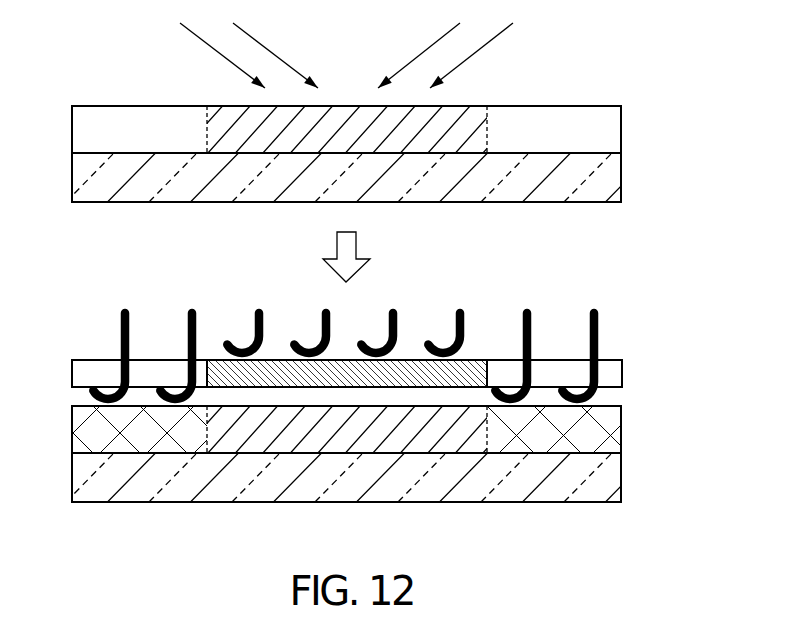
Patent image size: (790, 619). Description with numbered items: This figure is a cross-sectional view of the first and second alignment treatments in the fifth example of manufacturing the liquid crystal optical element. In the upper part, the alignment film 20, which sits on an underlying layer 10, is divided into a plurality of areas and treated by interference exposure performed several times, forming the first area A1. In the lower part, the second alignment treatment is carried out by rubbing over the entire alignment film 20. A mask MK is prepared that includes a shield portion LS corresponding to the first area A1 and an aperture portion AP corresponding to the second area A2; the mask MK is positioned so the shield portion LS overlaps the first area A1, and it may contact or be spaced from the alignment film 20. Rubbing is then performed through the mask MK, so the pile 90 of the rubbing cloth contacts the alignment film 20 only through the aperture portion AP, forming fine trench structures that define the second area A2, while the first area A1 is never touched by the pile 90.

The alignment film 20 is at (622, 125).
The substrate (first layer) 10 is at (622, 177).
The first area A1 is at (456, 142).
The second area A2 is at (147, 437).
The mask MK is at (622, 368).
The shield portion LS is at (478, 372).
The aperture portion AP is at (88, 363).
The pile 90 is at (194, 335).